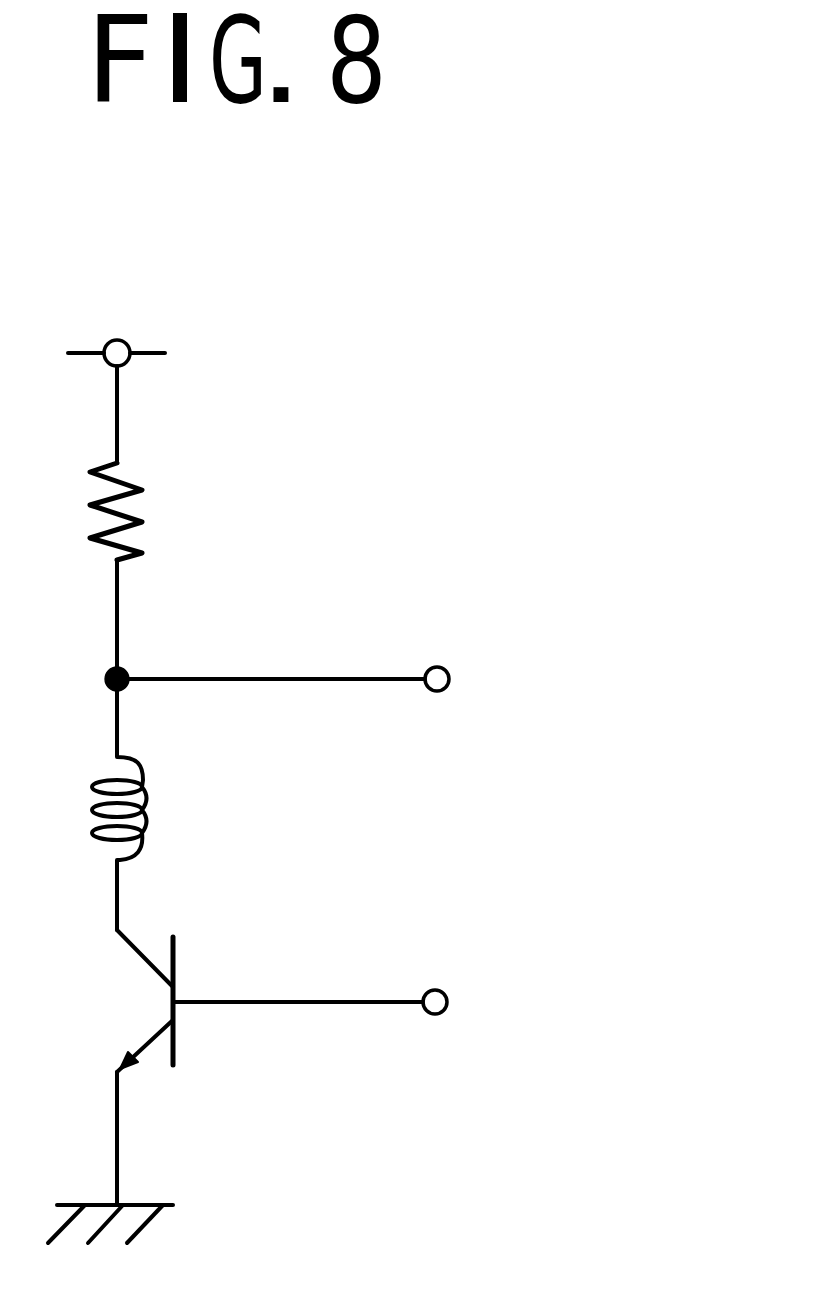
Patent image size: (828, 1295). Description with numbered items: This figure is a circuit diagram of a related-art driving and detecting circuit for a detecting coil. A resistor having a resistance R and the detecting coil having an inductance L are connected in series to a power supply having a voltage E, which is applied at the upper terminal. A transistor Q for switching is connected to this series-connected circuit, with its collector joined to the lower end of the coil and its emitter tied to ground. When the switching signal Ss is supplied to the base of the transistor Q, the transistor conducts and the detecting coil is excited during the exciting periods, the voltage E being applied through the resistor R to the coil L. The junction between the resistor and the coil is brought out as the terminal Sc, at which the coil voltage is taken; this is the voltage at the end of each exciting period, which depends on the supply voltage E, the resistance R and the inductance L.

The power supply voltage E is at (116, 350).
The resistor R is at (155, 518).
The detecting coil L is at (153, 830).
The transistor Q is at (185, 953).
The coil voltage signal Sc is at (401, 676).
The switching signal Ss is at (355, 999).